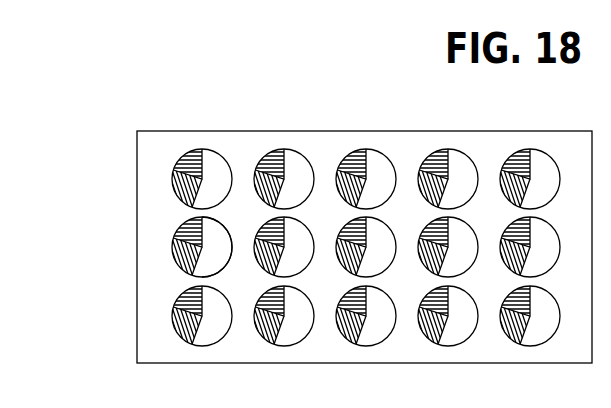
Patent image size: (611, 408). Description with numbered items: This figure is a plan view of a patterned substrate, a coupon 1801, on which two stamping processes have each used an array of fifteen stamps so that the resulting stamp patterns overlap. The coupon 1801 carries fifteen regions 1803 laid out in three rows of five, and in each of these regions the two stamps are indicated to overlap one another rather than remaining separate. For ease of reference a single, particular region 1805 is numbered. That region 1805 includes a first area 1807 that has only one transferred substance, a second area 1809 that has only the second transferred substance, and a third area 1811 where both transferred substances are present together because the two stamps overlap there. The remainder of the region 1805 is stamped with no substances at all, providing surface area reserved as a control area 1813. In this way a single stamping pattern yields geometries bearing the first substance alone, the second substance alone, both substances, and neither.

The coupon 1801 is at (199, 112).
The regions 1803 is at (507, 163).
The region 1805 is at (189, 219).
The first area 1807 is at (183, 232).
The third area 1811 is at (180, 245).
The second area 1809 is at (178, 262).
The control area 1813 is at (213, 263).